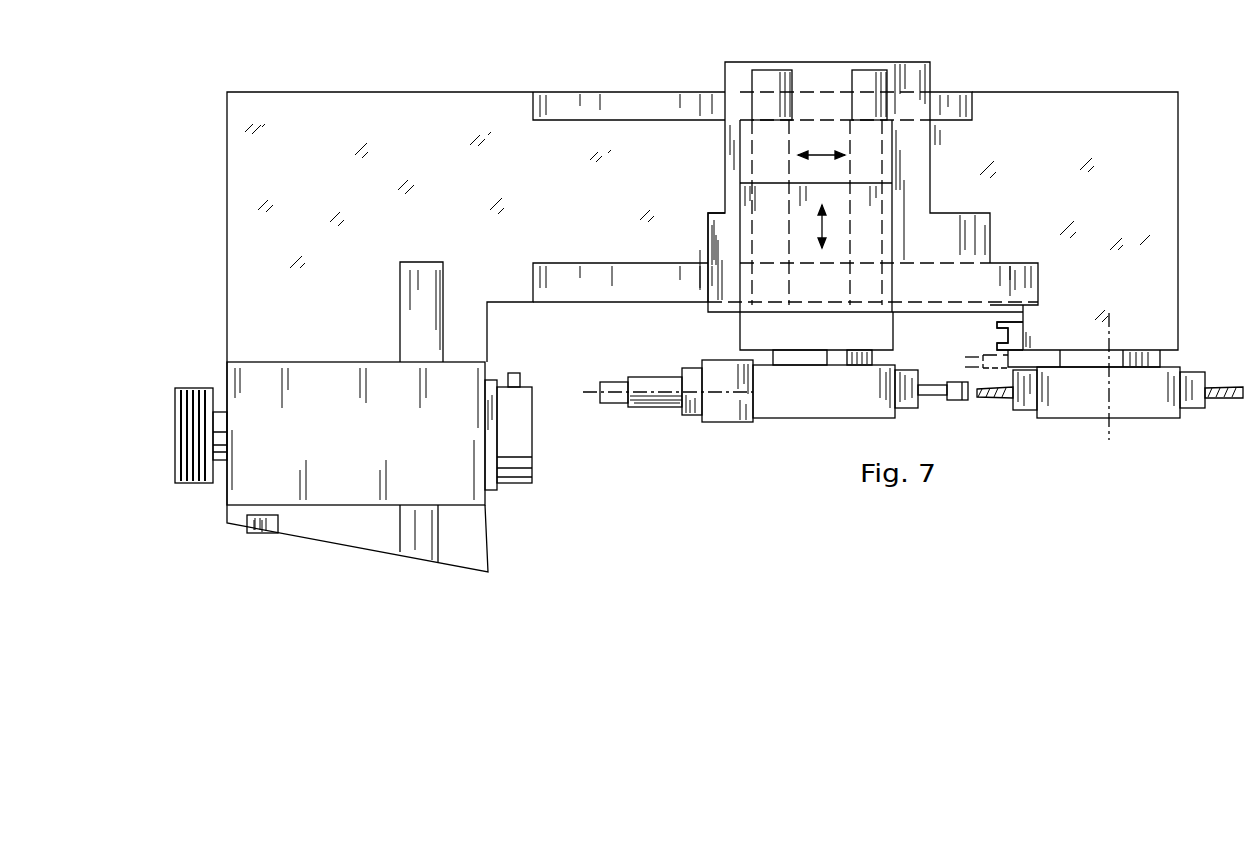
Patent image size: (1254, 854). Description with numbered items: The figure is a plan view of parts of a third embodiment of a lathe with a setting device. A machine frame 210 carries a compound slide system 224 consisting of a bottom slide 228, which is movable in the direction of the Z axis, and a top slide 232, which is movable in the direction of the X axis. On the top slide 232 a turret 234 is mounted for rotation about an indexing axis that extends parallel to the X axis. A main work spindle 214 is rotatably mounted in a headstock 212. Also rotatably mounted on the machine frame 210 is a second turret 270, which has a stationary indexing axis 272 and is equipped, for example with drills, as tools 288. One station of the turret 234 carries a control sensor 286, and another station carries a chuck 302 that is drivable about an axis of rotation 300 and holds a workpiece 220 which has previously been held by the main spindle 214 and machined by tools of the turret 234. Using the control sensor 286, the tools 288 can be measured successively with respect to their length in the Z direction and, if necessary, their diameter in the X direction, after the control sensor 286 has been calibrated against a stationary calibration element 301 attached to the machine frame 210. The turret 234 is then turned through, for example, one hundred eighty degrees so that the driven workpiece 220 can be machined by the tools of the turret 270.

The machine frame 210 is at (233, 150).
The headstock 212 is at (311, 368).
The main work spindle 214 is at (524, 418).
The workpiece 220 is at (651, 404).
The compound slide system 224 is at (715, 139).
The bottom slide 228 is at (720, 222).
The top slide 232 is at (758, 198).
The turret 234 is at (823, 400).
The control sensor 286 is at (957, 396).
The tools 288 is at (997, 396).
The turret 270 is at (1150, 403).
The indexing axis 272 is at (1107, 428).
The axis of rotation 300 is at (738, 400).
The calibration element 301 is at (1018, 328).
The chuck 302 is at (715, 410).